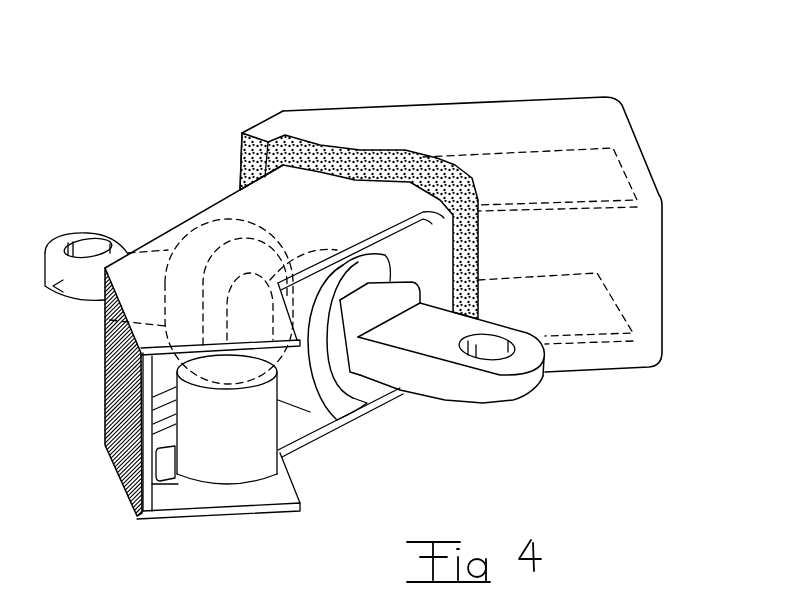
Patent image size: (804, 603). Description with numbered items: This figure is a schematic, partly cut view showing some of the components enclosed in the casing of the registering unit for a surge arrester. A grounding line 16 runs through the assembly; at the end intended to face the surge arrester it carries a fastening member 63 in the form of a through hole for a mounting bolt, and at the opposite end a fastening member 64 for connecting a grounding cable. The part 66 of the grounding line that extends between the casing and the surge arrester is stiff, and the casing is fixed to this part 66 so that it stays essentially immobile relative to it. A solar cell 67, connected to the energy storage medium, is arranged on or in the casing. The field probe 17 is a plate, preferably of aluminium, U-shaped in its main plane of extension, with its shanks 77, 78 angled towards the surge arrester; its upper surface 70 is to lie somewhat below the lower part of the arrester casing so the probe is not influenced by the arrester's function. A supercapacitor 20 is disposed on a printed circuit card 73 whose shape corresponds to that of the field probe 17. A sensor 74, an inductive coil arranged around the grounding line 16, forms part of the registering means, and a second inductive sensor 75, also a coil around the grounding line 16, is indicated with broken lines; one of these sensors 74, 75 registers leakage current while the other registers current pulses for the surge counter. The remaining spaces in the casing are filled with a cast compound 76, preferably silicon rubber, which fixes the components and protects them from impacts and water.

The grounding line 16 is at (103, 302).
The field probe 17 is at (242, 197).
The supercapacitor 20 is at (263, 467).
The fastening member 63 is at (493, 352).
The fastening member 64 is at (87, 247).
The part of the grounding line 66 is at (437, 378).
The solar cell 67 is at (110, 410).
The upper surface 70 is at (213, 212).
The printed circuit card 73 is at (220, 497).
The sensor 74 is at (365, 272).
The second inductive sensor 75 is at (197, 250).
The cast compound 76 is at (593, 110).
The shank 77 is at (523, 163).
The shank 78 is at (108, 338).